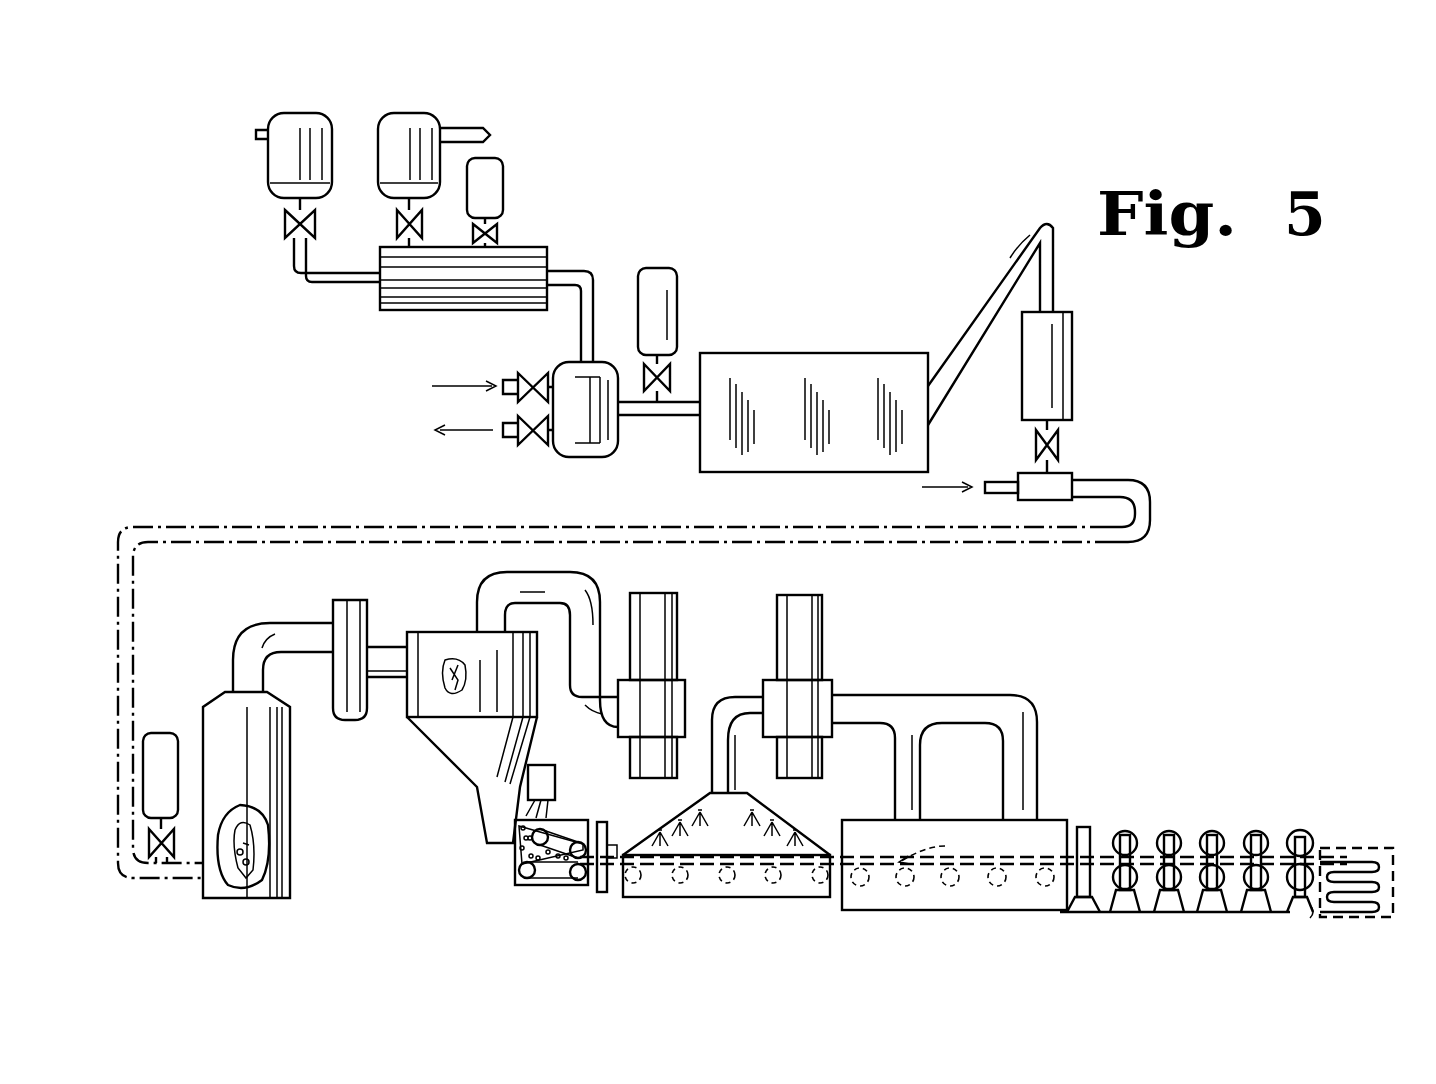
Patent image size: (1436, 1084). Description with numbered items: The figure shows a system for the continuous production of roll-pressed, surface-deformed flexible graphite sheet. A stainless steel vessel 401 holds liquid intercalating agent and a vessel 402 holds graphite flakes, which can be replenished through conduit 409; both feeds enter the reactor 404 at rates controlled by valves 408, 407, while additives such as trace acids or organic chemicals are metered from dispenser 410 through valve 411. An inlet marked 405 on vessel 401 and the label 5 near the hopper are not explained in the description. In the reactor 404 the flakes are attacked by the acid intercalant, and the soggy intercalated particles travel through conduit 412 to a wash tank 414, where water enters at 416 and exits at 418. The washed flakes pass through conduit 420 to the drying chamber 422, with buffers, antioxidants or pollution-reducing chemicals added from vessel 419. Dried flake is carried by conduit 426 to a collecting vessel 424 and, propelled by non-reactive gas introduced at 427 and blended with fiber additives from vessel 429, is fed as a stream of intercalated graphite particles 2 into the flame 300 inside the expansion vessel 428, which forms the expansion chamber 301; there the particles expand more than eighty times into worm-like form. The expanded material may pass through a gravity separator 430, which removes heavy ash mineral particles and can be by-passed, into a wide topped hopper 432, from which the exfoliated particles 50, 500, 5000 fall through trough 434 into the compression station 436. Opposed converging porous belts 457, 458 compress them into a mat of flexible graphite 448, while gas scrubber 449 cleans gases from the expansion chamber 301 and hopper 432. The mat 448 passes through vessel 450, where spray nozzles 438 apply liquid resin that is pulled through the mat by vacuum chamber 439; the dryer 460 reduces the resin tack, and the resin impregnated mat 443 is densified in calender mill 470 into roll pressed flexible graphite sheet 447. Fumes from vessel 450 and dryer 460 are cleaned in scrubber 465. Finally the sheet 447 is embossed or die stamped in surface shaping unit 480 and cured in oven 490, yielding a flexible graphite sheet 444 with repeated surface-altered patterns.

The intercalated graphite particles 2 is at (262, 857).
The exhaust gas 5 is at (450, 686).
The exfoliated expanded graphite particles 50 is at (466, 837).
The exfoliated expanded graphite particles 500 is at (466, 837).
The exfoliated expanded graphite particles 5000 is at (512, 838).
The flame 300 is at (286, 851).
The expansion chamber 301 is at (292, 792).
The vessel 401 is at (283, 173).
The vessel 402 is at (395, 226).
The reactor 404 is at (397, 311).
The inlet 405 is at (256, 134).
The valve 407 is at (326, 236).
The valve 408 is at (296, 240).
The conduit 409 is at (492, 146).
The dispenser 410 is at (505, 190).
The valve 411 is at (500, 236).
The conduit 412 is at (594, 303).
The wash tank 414 is at (563, 458).
The water inlet 416 is at (506, 377).
The water outlet 418 is at (509, 438).
The vessel 419 is at (672, 318).
The conduit 420 is at (628, 420).
The drying chamber 422 is at (782, 353).
The collecting vessel 424 is at (1020, 363).
The conduit 426 is at (985, 317).
The non-reactive gas inlet 427 is at (1000, 498).
The expansion vessel 428 is at (200, 745).
The vessel 429 is at (150, 728).
The gravity separator 430 is at (330, 620).
The wide topped hopper 432 is at (501, 707).
The trough 434 is at (504, 845).
The compression station 436 is at (512, 868).
The spray nozzles 438 is at (726, 824).
The vacuum chamber 439 is at (712, 853).
The resin impregnated mat 443 is at (595, 888).
The flexible graphite sheet 444 is at (1322, 848).
The roll pressed flexible graphite sheet 447 is at (1108, 855).
The mat of flexible graphite 448 is at (620, 850).
The gas scrubber 449 is at (680, 645).
The vessel 450 is at (770, 812).
The moving porous belt 457 is at (562, 840).
The moving porous belt 458 is at (530, 885).
The dryer 460 is at (954, 806).
The scrubber 465 is at (826, 666).
The calender mill 470 is at (1137, 818).
The surface shaping unit 480 is at (1315, 912).
The oven 490 is at (1362, 830).